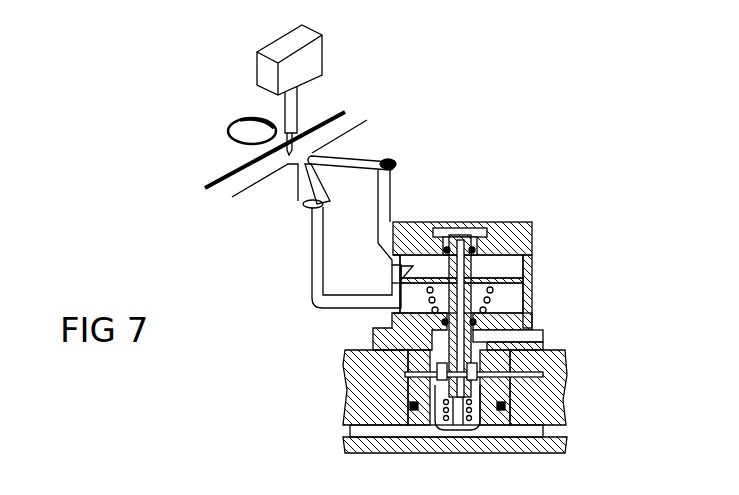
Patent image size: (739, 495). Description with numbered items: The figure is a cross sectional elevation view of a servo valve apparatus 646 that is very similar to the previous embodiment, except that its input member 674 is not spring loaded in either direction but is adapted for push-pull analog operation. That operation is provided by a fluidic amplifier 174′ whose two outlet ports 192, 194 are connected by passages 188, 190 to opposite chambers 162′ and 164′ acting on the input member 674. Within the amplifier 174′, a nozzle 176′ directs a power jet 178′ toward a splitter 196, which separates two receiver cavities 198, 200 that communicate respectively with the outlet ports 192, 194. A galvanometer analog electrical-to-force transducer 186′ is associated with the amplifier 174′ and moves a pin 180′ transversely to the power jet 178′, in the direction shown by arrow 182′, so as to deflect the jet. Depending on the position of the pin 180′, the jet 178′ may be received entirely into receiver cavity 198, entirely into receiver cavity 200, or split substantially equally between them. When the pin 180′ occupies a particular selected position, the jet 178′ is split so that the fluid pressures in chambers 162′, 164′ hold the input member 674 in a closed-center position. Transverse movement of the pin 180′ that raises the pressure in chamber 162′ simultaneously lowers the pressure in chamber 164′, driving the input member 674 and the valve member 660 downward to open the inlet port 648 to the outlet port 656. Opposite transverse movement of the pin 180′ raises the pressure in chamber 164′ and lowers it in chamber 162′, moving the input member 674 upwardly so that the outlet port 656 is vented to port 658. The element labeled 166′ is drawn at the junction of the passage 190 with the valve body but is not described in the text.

The galvanometer analog electrical-to-force transducer 186′ is at (320, 48).
The arrow 182′ is at (316, 88).
The power jet 178′ is at (265, 108).
The nozzle 176′ is at (240, 139).
The pin 180′ is at (265, 150).
The fluidic amplifier 174′ is at (392, 73).
The servo valve apparatus 646 is at (513, 129).
The receiver cavity 198 is at (345, 150).
The outlet port 192 is at (396, 160).
The passage 188 is at (393, 191).
The splitter 196 is at (322, 178).
The receiver cavity 200 is at (300, 178).
The outlet port 194 is at (302, 208).
The passage 190 is at (312, 266).
The valve flap 166′ is at (392, 268).
The chamber 162′ is at (530, 232).
The valve member 660 is at (500, 268).
The chamber 164′ is at (513, 300).
The input member 674 is at (477, 333).
The port 658 is at (537, 334).
The inlet port 648 is at (530, 377).
The outlet port 656 is at (458, 430).